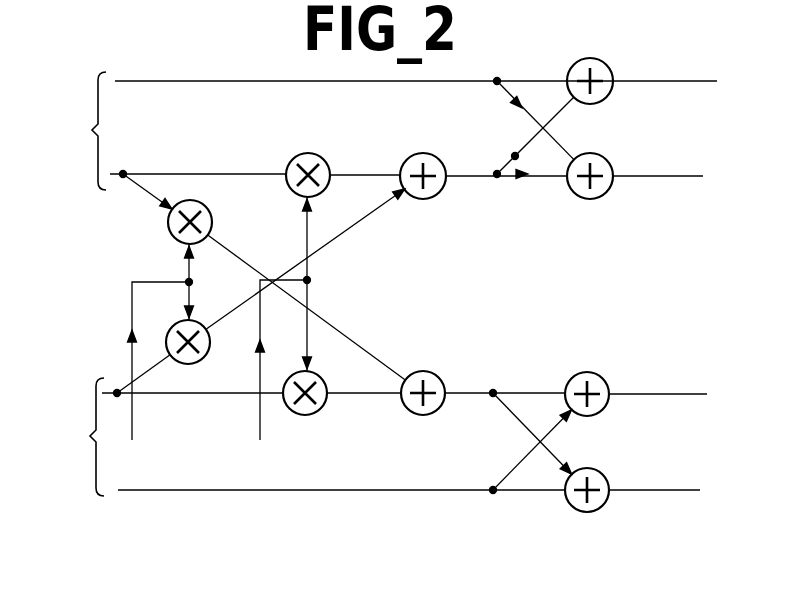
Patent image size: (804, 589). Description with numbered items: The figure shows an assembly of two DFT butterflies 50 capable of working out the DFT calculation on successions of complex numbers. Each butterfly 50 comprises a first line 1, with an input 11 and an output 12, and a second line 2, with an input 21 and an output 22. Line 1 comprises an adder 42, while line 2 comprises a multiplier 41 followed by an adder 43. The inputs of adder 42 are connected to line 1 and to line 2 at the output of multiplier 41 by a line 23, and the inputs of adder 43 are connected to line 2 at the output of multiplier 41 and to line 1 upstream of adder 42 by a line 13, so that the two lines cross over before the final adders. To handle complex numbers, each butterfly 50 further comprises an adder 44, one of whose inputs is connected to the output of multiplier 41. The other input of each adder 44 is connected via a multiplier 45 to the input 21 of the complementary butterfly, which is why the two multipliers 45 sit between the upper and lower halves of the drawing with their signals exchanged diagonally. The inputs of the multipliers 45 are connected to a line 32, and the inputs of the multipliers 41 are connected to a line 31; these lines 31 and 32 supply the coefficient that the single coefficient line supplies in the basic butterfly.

The first line 1 is at (536, 80).
The second line 2 is at (553, 179).
The input 11 is at (160, 81).
The output 12 is at (683, 81).
The line 13 is at (508, 96).
The input 21 is at (123, 174).
The output 22 is at (690, 176).
The line 23 is at (560, 112).
The line 31 is at (258, 430).
The line 32 is at (132, 414).
The multiplier 41 is at (292, 158).
The adder 42 is at (607, 70).
The adder 43 is at (610, 166).
The adder 44 is at (412, 160).
The multiplier 45 is at (168, 226).
The DFT butterfly 50 is at (78, 284).